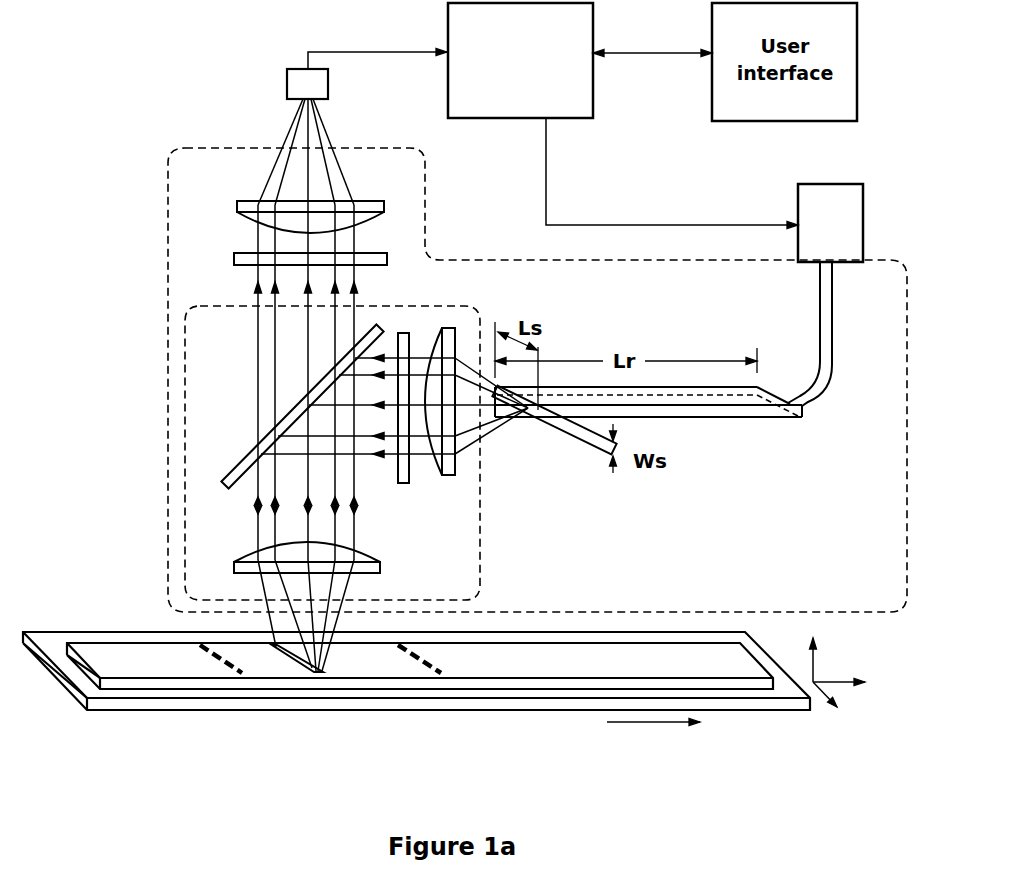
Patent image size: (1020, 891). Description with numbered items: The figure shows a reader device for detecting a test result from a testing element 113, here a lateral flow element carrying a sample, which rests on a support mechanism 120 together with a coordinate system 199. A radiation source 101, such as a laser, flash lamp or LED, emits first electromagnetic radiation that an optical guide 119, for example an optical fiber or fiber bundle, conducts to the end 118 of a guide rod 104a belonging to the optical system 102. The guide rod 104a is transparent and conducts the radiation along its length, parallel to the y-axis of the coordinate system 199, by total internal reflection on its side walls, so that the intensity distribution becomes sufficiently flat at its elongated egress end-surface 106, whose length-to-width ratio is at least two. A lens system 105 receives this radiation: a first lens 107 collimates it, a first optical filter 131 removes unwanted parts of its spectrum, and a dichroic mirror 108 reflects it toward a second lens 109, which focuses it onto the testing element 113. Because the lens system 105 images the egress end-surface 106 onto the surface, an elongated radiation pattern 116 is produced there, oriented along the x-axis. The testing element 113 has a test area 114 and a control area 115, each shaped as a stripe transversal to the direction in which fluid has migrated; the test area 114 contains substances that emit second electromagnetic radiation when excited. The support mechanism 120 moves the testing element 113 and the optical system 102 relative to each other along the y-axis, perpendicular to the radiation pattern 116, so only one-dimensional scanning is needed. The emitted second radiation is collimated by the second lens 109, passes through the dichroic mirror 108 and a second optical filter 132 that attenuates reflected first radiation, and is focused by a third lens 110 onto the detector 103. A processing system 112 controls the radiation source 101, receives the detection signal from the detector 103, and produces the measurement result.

The radiation source 101 is at (863, 222).
The optical system 102 is at (167, 273).
The detector 103 is at (287, 83).
The guide rod 104a is at (673, 418).
The lens system 105 is at (481, 528).
The egress end-surface 106 is at (533, 413).
The first lens 107 is at (453, 325).
The dichroic mirror 108 is at (250, 453).
The second lens 109 is at (233, 568).
The third lens 110 is at (237, 206).
The processing system 112 is at (498, 104).
The testing element 113 is at (553, 674).
The test area 114 is at (217, 662).
The control area 115 is at (410, 663).
The radiation pattern 116 is at (288, 662).
The end of the guide rod 118 is at (802, 418).
The optical guide 119 is at (820, 343).
The support mechanism 120 is at (562, 710).
The first optical filter 131 is at (403, 483).
The second optical filter 132 is at (234, 259).
The coordinate system 199 is at (821, 670).